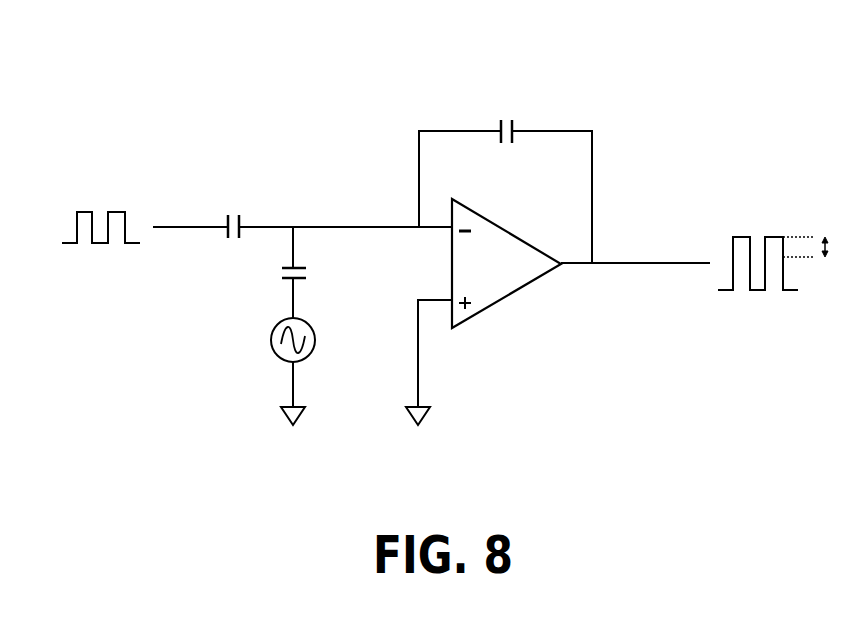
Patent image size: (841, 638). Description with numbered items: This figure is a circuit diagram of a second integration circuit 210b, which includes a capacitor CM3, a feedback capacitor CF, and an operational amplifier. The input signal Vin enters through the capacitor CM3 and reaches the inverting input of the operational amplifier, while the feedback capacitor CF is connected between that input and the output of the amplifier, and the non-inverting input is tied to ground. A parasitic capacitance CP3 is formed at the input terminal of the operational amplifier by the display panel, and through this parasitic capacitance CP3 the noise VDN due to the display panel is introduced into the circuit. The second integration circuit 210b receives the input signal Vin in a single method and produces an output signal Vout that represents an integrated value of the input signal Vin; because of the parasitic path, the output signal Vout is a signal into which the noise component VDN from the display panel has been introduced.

The second integration circuit 210b is at (108, 63).
The input signal Vin is at (101, 208).
The capacitor CM3 is at (233, 211).
The parasitic capacitance CP3 is at (275, 287).
The noise VDN is at (311, 359).
The feedback capacitor CF is at (509, 113).
The output signal Vout is at (773, 242).